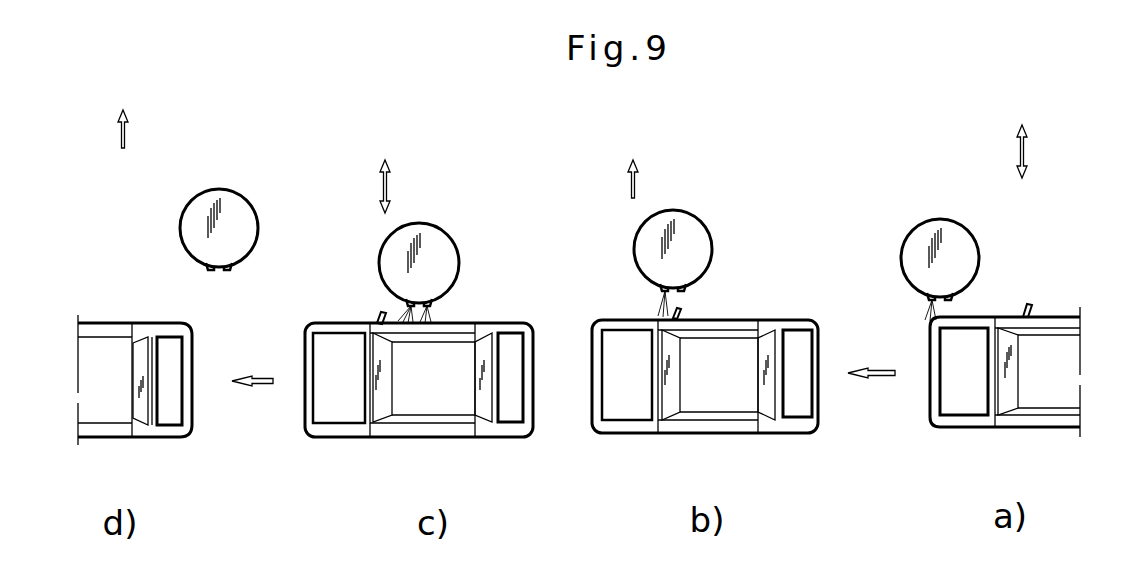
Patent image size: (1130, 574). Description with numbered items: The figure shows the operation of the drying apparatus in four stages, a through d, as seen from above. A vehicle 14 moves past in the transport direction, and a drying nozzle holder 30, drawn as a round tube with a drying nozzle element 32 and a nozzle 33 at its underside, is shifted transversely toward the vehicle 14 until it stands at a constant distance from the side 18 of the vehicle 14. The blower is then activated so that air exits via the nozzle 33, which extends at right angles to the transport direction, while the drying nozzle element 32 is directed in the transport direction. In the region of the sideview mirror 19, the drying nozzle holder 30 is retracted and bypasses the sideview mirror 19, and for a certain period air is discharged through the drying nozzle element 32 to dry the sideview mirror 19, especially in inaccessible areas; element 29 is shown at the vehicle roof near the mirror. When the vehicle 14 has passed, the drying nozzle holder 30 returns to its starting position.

The vehicle 14 is at (168, 430).
The side of the vehicle 18 is at (118, 323).
The sideview mirror 19 is at (378, 318).
The passenger compartment opening 29 is at (382, 323).
The drying nozzle holder 30 is at (234, 215).
The drying nozzle element 32 is at (205, 269).
The nozzle 33 is at (226, 269).